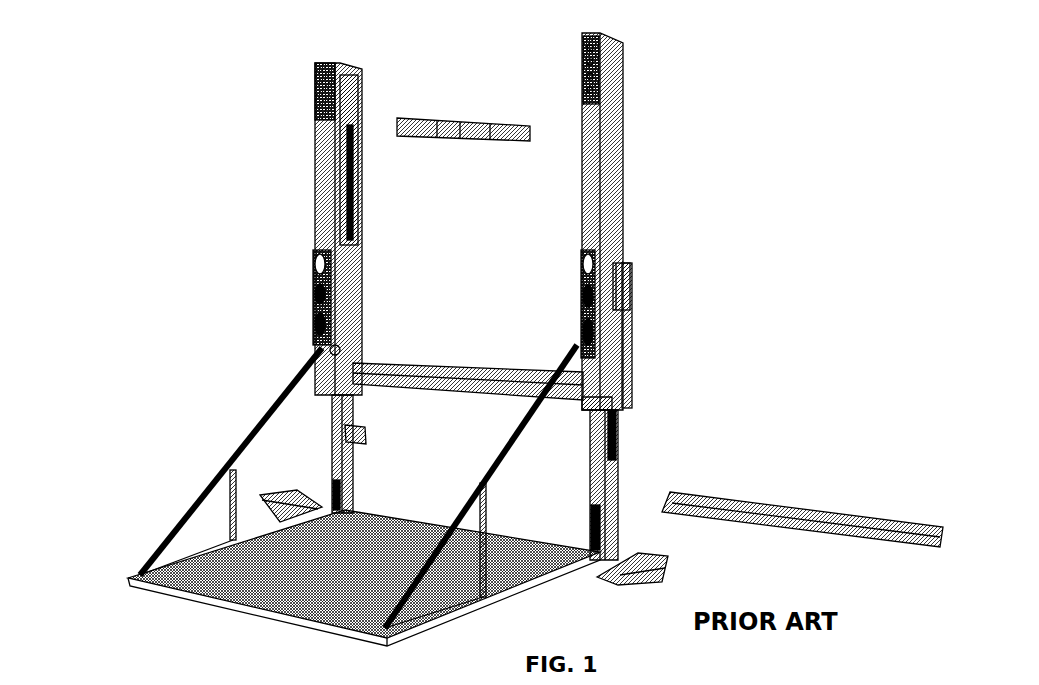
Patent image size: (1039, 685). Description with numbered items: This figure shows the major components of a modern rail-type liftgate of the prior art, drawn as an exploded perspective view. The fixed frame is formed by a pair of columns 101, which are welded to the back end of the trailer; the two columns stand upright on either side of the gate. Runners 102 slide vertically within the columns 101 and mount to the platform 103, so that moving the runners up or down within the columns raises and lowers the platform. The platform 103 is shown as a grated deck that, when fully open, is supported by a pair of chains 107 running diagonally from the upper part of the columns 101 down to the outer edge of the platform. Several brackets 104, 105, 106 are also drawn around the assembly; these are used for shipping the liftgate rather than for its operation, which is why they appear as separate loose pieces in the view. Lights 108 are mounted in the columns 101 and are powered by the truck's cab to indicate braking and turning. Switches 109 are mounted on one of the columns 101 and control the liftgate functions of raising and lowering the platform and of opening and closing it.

The columns 101 is at (613, 143).
The runners 102 is at (611, 500).
The platform 103 is at (178, 593).
The brackets 104 is at (272, 493).
The brackets 105 is at (866, 517).
The brackets 106 is at (463, 94).
The chains 107 is at (210, 492).
The lights 108 is at (316, 323).
The switches 109 is at (612, 290).